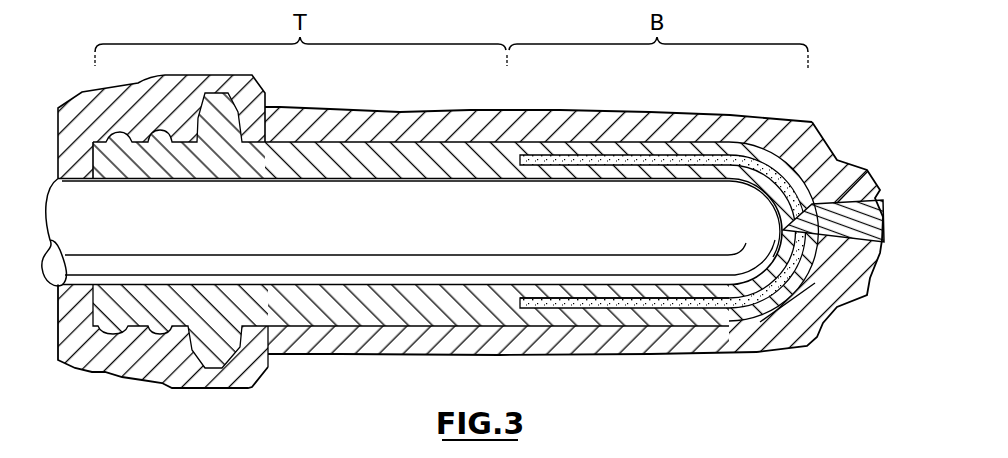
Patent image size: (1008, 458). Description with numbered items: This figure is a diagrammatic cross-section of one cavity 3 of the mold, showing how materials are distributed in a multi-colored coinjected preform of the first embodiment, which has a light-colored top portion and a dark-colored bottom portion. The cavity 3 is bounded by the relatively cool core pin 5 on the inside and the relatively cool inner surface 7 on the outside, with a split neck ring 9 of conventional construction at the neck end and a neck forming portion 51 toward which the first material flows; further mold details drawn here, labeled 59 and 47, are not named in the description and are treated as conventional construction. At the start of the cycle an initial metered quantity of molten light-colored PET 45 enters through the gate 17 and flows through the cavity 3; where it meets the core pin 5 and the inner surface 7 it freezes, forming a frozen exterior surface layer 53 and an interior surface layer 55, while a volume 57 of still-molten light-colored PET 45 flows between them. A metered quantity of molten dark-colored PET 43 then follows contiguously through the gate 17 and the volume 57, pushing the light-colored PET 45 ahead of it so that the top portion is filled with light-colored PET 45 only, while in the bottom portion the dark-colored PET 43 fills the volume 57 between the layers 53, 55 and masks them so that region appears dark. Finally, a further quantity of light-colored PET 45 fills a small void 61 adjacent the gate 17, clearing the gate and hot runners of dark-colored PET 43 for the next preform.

The cavity 3 is at (383, 140).
The core pin 5 is at (443, 248).
The inner surface 7 is at (435, 145).
The split neck ring 9 is at (172, 370).
The gate 17 is at (833, 206).
The dark-colored PET 43 is at (662, 160).
The light-colored PET 45 is at (350, 147).
The outer layer end portion 47 is at (762, 322).
The neck forming portion 51 is at (132, 338).
The exterior surface layer 53 is at (566, 150).
The interior surface layer 55 is at (585, 298).
The volume 57 is at (587, 308).
The upper nut 59 is at (150, 84).
The void 61 is at (808, 262).